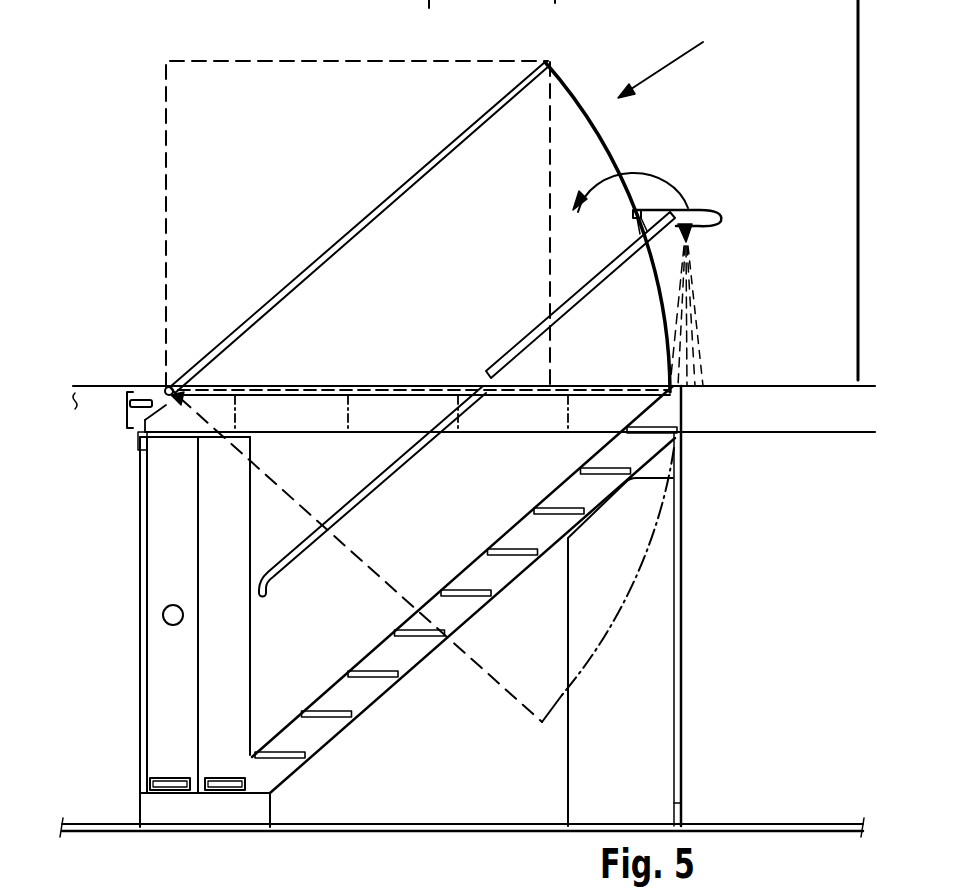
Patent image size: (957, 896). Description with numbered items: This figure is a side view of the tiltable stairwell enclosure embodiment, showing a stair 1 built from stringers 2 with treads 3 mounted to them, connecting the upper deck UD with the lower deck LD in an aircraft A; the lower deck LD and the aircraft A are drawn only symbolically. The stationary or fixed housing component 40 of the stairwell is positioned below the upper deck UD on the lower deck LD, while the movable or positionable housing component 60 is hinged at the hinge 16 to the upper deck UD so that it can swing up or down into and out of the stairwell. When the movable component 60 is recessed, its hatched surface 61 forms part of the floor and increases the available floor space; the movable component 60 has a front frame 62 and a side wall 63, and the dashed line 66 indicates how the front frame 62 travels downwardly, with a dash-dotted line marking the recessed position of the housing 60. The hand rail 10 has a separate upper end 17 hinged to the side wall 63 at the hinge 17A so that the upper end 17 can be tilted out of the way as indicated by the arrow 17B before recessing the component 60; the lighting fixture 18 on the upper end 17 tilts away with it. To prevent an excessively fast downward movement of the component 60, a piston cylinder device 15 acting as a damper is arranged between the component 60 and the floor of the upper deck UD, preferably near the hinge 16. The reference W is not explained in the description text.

The stair 1 is at (335, 733).
The stringers 2 is at (410, 657).
The treads 3 is at (437, 643).
The hand rail 10 is at (518, 346).
The piston cylinder device 15 is at (138, 398).
The hinge 16 is at (170, 388).
The upper end of the hand rail 17 is at (663, 212).
The hinge of the upper end 17A is at (633, 217).
The tilting arrow 17B is at (655, 162).
The lighting fixture 18 is at (698, 242).
The stationary housing component 40 is at (673, 588).
The movable housing component 60 is at (677, 59).
The hatched surface 61 is at (347, 236).
The front frame 62 is at (614, 128).
The side wall 63 is at (540, 117).
The dashed line 66 is at (615, 610).
The working space W is at (237, 60).
The aircraft A is at (857, 22).
The upper deck UD is at (750, 420).
The lower deck LD is at (783, 826).